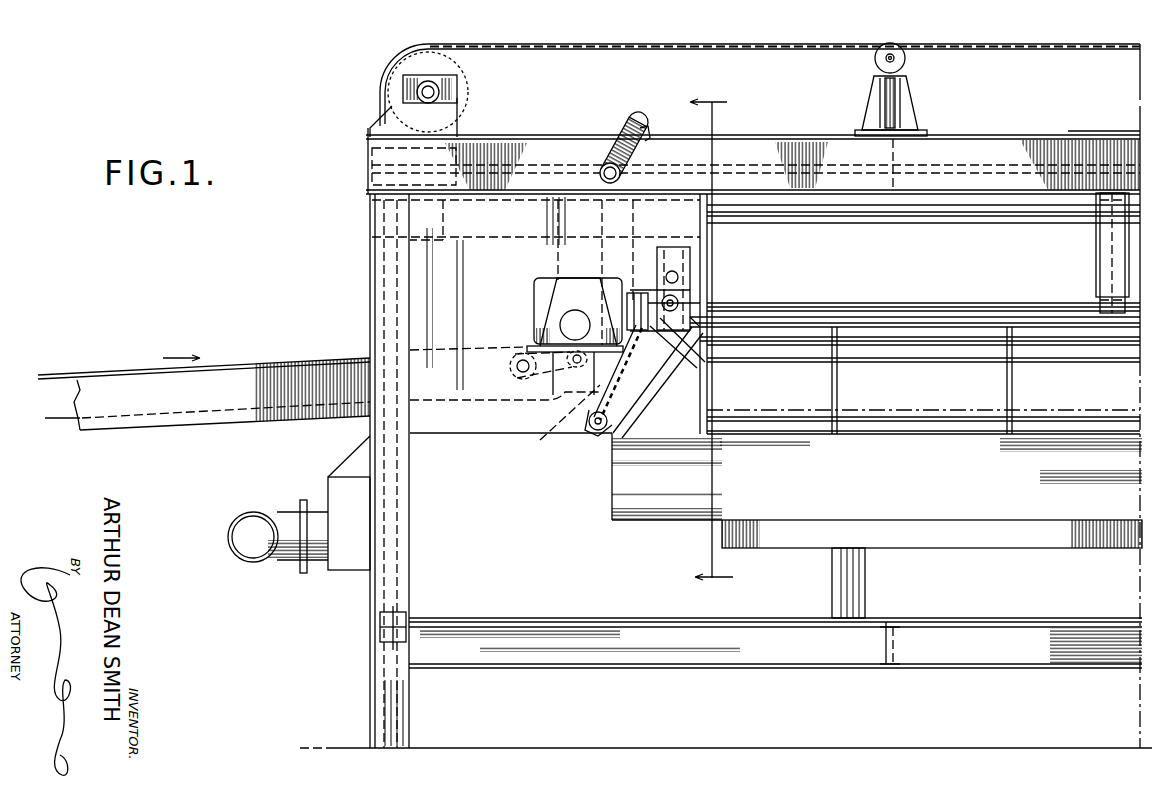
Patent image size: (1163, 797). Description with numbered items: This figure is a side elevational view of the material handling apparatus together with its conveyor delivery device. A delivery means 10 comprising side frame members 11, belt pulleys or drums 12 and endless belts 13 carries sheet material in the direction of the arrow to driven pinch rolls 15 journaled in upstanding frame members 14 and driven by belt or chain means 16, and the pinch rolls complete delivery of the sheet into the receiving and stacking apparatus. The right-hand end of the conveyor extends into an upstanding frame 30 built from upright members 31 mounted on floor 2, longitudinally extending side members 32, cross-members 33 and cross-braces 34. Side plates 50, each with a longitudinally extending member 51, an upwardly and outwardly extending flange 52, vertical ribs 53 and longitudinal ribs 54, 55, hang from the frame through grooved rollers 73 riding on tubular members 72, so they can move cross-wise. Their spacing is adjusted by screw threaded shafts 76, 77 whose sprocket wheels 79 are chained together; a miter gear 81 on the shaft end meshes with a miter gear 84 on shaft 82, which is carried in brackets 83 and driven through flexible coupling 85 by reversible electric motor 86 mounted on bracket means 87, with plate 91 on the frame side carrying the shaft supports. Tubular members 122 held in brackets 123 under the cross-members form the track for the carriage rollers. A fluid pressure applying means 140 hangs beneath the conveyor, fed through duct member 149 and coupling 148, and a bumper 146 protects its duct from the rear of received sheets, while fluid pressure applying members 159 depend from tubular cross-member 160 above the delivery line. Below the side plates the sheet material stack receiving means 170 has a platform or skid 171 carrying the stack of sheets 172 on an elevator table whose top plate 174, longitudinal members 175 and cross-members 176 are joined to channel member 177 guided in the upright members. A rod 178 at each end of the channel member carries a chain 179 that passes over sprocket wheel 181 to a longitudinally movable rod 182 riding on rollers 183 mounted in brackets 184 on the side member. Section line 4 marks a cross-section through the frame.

The floor 2 is at (745, 742).
The section line 4- 4 is at (711, 342).
The delivery means 10 is at (294, 360).
The side frame members 11 is at (303, 420).
The belt pulleys or drums 12 is at (508, 366).
The endless belts 13 is at (60, 420).
The upstanding frame members 14 is at (548, 302).
The driven pinch rolls 15 is at (545, 330).
The belt or chain means 16 is at (505, 380).
The upstanding frame 30 is at (1048, 122).
The upright members 31 is at (410, 520).
The longitudinally extending side members 32 is at (1004, 135).
The cross-members 33 is at (452, 160).
The cross-braces 34 is at (896, 151).
The side plates 50 is at (890, 438).
The longitudinally extending member 51 is at (923, 397).
The upwardly and outwardly extending flange 52 is at (940, 358).
The vertical ribs or braces 53 is at (708, 391).
The longitudinal ribs or braces 54 is at (862, 346).
The longitudinal ribs or braces 55 is at (946, 436).
The tubular member 72 is at (680, 278).
The grooved rollers 73 is at (673, 277).
The screw threaded shaft 76 is at (712, 318).
The screw threaded shaft 77 is at (607, 440).
The sprocket wheel 79 is at (586, 433).
The miter gear 81 is at (680, 300).
The shaft or rod 82 is at (930, 303).
The brackets 83 is at (1097, 257).
The miter gear 84 is at (706, 362).
The flexible coupling 85 is at (630, 292).
The electric motor 86 is at (546, 278).
The bracket means 87 is at (545, 434).
The plate 91 is at (712, 240).
The tubular members 122 is at (852, 224).
The brackets 123 is at (424, 234).
The fluid pressure applying means 140 is at (345, 571).
The bumper 146 is at (626, 402).
The coupling 148 is at (303, 574).
The duct member 149 is at (255, 562).
The fluid pressure applying members 159 is at (630, 238).
The tubular cross-member 160 is at (634, 115).
The sheet material stack receiving means 170 is at (781, 646).
The platform or skid 171 is at (932, 569).
The stack of sheets 172 is at (625, 522).
The top plate 174 is at (1038, 617).
The longitudinal members 175 is at (1006, 669).
The cross-members 176 is at (896, 645).
The channel member 177 is at (380, 620).
The rod 178 is at (398, 490).
The chain 179 is at (527, 50).
The sprocket wheel 181 is at (458, 92).
The longitudinally movable rod 182 is at (462, 118).
The rollers 183 is at (906, 62).
The brackets 184 is at (906, 100).